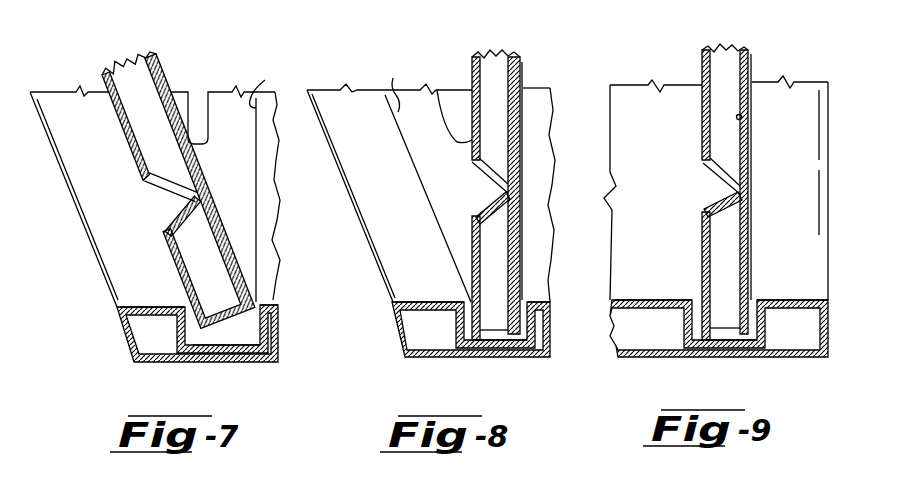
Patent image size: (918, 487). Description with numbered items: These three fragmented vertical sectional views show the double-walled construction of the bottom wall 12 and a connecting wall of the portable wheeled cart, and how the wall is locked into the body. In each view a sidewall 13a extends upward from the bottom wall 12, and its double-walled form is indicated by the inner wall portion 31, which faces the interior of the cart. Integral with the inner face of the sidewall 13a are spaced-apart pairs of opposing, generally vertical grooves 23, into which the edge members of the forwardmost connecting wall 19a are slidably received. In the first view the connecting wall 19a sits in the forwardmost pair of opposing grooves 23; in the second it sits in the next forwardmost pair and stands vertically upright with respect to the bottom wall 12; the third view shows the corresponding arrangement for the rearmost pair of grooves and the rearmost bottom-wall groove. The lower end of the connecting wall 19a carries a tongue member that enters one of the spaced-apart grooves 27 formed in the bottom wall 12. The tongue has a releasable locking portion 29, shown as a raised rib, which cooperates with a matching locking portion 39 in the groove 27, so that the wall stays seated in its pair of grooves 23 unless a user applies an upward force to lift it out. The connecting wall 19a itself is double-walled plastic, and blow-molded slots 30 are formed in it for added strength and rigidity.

In FIG. 7, the bottom wall 12 is at (153, 372).
In FIG. 8, the bottom wall 12 is at (428, 366).
In FIG. 9, the bottom wall 12 is at (648, 368).
In FIG. 7, the sidewall 13a is at (98, 189).
In FIG. 8, the sidewall 13a is at (383, 189).
In FIG. 9, the sidewall 13a is at (645, 197).
In FIG. 7, the forwardmost connecting wall 19a is at (129, 57).
In FIG. 8, the forwardmost connecting wall 19a is at (512, 55).
In FIG. 9, the forwardmost connecting wall 19a is at (739, 44).
In FIG. 7, the grooves 23 is at (271, 181).
In FIG. 8, the grooves 23 is at (562, 98).
In FIG. 9, the grooves 23 is at (742, 116).
In FIG. 7, the spaced-apart grooves 27 is at (242, 332).
In FIG. 8, the spaced-apart grooves 27 is at (494, 326).
In FIG. 9, the spaced-apart grooves 27 is at (720, 330).
In FIG. 7, the releasable locking portions 29 is at (230, 316).
In FIG. 8, the releasable locking portions 29 is at (484, 315).
In FIG. 9, the releasable locking portions 29 is at (732, 312).
In FIG. 7, the slots 30 is at (172, 215).
In FIG. 8, the slots 30 is at (480, 206).
In FIG. 9, the slots 30 is at (704, 212).
In FIG. 7, the inner wall portion 31 is at (99, 141).
In FIG. 8, the inner wall portion 31 is at (380, 154).
In FIG. 9, the inner wall portion 31 is at (667, 147).
In FIG. 7, the cooperating locking portion 39 is at (184, 305).
In FIG. 8, the cooperating locking portion 39 is at (465, 304).
In FIG. 9, the cooperating locking portion 39 is at (693, 298).